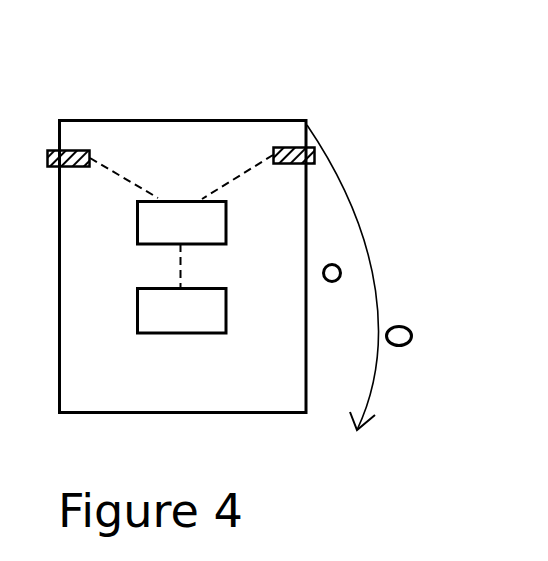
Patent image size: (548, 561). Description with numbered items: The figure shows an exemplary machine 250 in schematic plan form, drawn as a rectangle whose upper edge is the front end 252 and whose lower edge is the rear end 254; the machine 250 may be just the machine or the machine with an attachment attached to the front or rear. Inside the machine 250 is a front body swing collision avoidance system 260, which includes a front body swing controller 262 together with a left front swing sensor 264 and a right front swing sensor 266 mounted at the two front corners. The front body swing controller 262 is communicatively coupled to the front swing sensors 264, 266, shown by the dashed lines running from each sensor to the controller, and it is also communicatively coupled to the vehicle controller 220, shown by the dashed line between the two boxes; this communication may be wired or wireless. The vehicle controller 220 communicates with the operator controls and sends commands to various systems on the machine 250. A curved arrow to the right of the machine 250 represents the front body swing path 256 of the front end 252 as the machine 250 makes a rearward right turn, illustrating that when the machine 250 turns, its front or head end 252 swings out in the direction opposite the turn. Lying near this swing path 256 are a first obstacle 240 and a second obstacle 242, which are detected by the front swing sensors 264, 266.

The machine 250 is at (250, 95).
The front end 252 is at (173, 119).
The rear end 254 is at (152, 415).
The front body swing path 256 is at (357, 196).
The left front swing sensor 264 is at (72, 150).
The right front swing sensor 266 is at (312, 152).
The front body swing collision avoidance system 260 is at (122, 244).
The front body swing controller 262 is at (182, 223).
The vehicle controller 220 is at (182, 311).
The first obstacle 240 is at (340, 267).
The second obstacle 242 is at (406, 327).